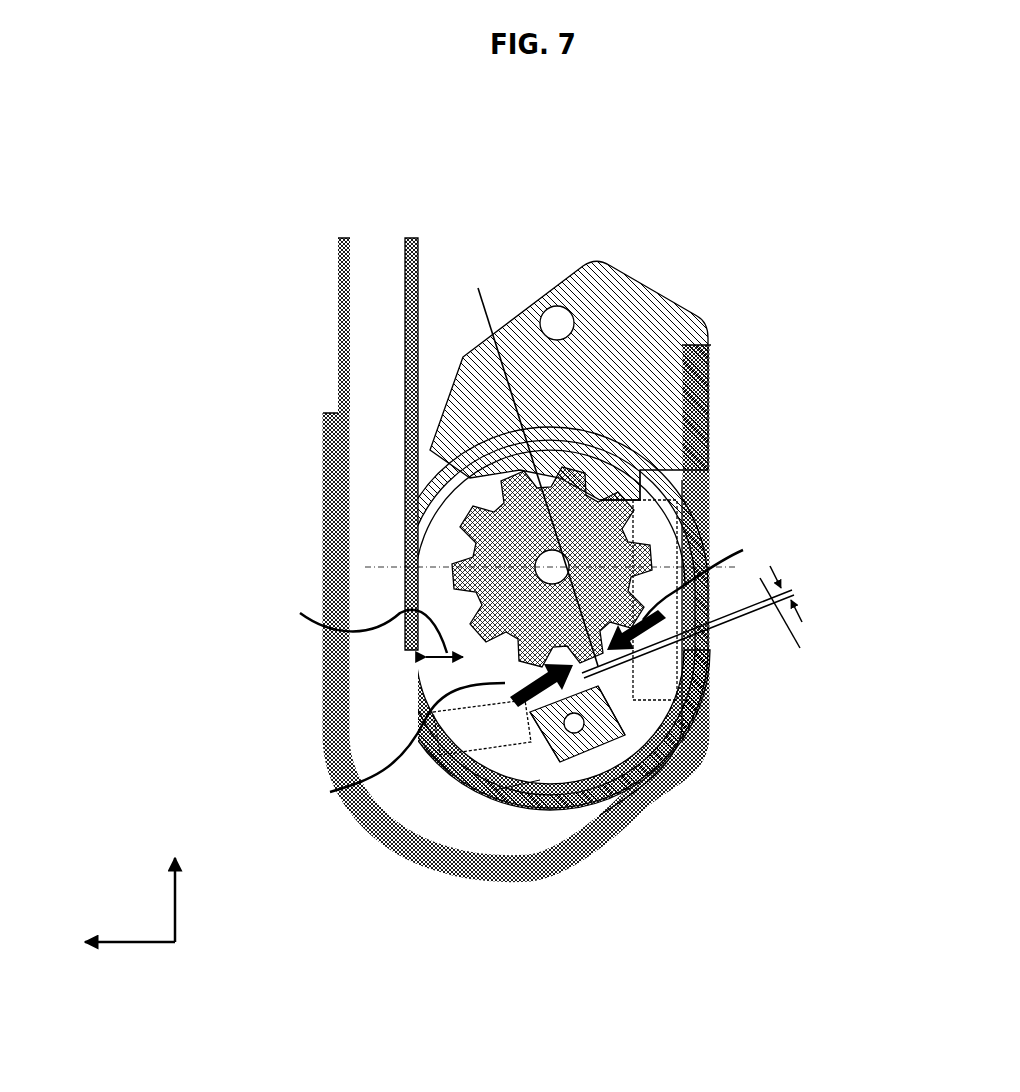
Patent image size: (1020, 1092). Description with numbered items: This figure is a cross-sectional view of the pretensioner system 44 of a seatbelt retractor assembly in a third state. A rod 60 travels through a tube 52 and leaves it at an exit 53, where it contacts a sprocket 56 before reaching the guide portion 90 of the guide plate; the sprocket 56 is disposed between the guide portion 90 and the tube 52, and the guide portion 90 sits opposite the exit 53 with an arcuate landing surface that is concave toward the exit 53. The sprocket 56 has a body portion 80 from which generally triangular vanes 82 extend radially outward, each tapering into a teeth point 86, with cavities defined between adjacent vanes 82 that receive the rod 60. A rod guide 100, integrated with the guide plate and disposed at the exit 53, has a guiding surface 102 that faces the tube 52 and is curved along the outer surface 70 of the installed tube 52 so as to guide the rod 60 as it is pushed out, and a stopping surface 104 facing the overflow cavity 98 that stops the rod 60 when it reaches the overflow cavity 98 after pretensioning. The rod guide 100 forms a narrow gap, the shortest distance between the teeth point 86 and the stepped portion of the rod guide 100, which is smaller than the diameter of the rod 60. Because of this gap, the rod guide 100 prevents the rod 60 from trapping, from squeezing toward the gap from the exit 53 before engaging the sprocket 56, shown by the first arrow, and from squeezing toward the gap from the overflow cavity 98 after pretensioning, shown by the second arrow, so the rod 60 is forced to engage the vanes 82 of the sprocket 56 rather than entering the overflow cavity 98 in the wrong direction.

The pretensioner system 44 is at (658, 193).
The tube 52 is at (385, 750).
The exit 53 is at (662, 722).
The sprocket 56 is at (603, 518).
The rod 60 is at (627, 475).
The outer surface 70 is at (533, 772).
The body portion 80 is at (512, 556).
The vanes 82 is at (492, 492).
The teeth point 86 is at (483, 477).
The guide portion 90 is at (632, 357).
The overflow cavity 98 is at (500, 718).
The rod guide 100 is at (593, 707).
The guiding surface 102 is at (587, 733).
The stopping surface 104 is at (557, 737).